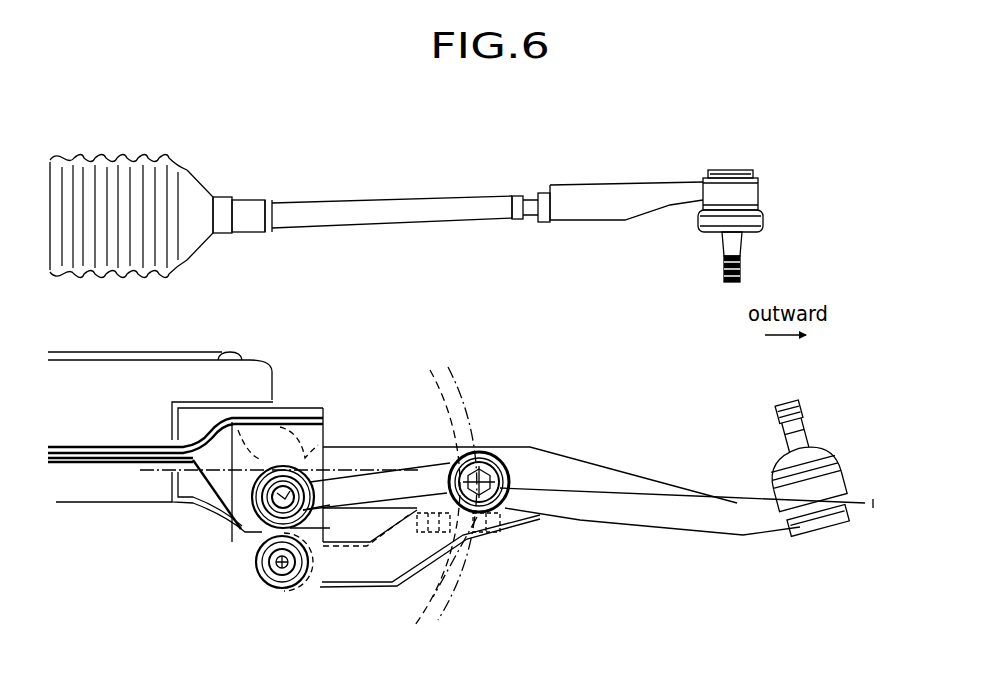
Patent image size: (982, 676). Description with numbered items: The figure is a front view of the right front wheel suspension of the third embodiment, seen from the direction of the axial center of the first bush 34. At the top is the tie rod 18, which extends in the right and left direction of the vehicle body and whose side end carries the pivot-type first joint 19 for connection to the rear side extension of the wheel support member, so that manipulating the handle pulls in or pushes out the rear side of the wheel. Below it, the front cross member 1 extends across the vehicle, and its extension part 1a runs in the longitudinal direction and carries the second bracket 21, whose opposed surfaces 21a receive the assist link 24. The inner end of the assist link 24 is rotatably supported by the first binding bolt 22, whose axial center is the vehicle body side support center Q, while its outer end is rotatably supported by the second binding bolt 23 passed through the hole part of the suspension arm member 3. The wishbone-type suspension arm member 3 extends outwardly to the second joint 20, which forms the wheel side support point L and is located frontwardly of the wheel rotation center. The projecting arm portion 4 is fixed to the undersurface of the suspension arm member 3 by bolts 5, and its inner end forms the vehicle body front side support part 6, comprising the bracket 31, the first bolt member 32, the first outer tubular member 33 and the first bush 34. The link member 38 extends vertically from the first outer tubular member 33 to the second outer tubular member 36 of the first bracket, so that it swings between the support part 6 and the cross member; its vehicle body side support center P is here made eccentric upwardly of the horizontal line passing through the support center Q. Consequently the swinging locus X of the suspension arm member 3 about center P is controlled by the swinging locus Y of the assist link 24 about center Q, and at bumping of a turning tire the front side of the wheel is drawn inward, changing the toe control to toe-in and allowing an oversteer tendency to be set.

The front cross member 1 is at (105, 508).
The extension part 1a is at (265, 358).
The suspension arm member 3 is at (627, 470).
The projecting arm portion 4 is at (400, 586).
The bolts 5 is at (500, 538).
The vehicle body front side support part 6 is at (261, 601).
The tie rod 18 is at (433, 194).
The first joint 19 is at (763, 222).
The second joint 20 is at (822, 450).
The second bracket 21 is at (245, 531).
The opposed surfaces 21a is at (318, 467).
The first binding bolt 22 is at (268, 428).
The second binding bolt 23 is at (490, 466).
The assist link 24 is at (413, 468).
The bracket 31 is at (313, 591).
The first bolt member 32 is at (279, 586).
The first outer tubular member 33 is at (258, 572).
The first bush 34 is at (300, 591).
The second outer tubular member 36 is at (237, 402).
The link member 38 is at (322, 522).
The vehicle body side support center of the link member P is at (292, 416).
The vehicle body side support center of the assist link Q is at (297, 478).
The swinging locus of the suspension arm member X is at (458, 375).
The swinging locus of the assist link Y is at (435, 383).
The wheel side support point L is at (813, 504).